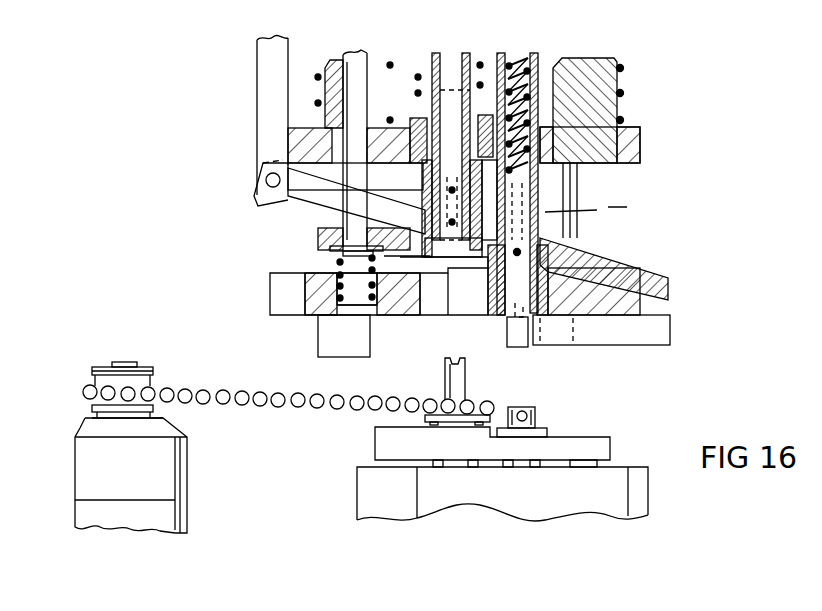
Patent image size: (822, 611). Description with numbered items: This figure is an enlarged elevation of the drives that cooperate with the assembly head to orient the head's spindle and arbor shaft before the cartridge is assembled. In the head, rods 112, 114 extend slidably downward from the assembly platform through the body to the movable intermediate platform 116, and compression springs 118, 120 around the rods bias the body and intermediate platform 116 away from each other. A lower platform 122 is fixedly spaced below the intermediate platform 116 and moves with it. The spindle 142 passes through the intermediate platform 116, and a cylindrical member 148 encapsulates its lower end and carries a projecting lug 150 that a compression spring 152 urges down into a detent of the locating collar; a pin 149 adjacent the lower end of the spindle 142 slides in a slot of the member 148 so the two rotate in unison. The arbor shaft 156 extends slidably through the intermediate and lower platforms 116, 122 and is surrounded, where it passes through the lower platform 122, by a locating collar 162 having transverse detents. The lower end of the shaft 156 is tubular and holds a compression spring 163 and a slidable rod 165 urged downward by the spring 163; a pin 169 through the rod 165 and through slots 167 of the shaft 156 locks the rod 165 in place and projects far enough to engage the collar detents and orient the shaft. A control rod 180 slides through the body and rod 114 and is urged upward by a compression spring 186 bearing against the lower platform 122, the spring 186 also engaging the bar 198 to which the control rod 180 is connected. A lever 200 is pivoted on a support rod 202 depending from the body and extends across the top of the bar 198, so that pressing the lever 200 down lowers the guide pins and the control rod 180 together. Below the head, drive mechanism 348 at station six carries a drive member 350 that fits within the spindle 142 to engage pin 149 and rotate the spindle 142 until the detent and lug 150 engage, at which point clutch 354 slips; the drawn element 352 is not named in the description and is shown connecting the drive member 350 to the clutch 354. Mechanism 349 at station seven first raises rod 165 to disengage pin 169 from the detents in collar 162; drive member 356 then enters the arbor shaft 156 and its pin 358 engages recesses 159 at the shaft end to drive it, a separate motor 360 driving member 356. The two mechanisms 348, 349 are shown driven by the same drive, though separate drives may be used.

The rod 112 is at (565, 62).
The rod 114 is at (327, 60).
The intermediate platform 116 is at (641, 137).
The compression spring 118 is at (624, 93).
The compression spring 120 is at (315, 77).
The lower platform 122 is at (270, 293).
The spindle 142 is at (462, 53).
The cylindrical member 148 is at (433, 262).
The pin 149 is at (356, 198).
The projecting lug 150 is at (390, 117).
The compression spring 152 is at (418, 73).
The shaft 156 is at (538, 56).
The recesses 159 is at (512, 295).
The locating collar 162 is at (556, 300).
The compression spring 163 is at (517, 53).
The slidable rod 165 is at (525, 347).
The slots 167 is at (608, 202).
The pin 169 is at (518, 250).
The control rod 180 is at (350, 222).
The compression spring 186 is at (336, 262).
The bar 198 is at (318, 238).
The lever 200 is at (670, 284).
The support rod 202 is at (262, 104).
The drive mechanism 348 is at (258, 380).
The mechanism 349 is at (575, 418).
The drive member 350 is at (445, 375).
The ball chain 352 is at (246, 404).
The clutch 354 is at (170, 479).
The drive member 356 is at (529, 406).
The pin 358 is at (548, 421).
The motor 360 is at (600, 503).